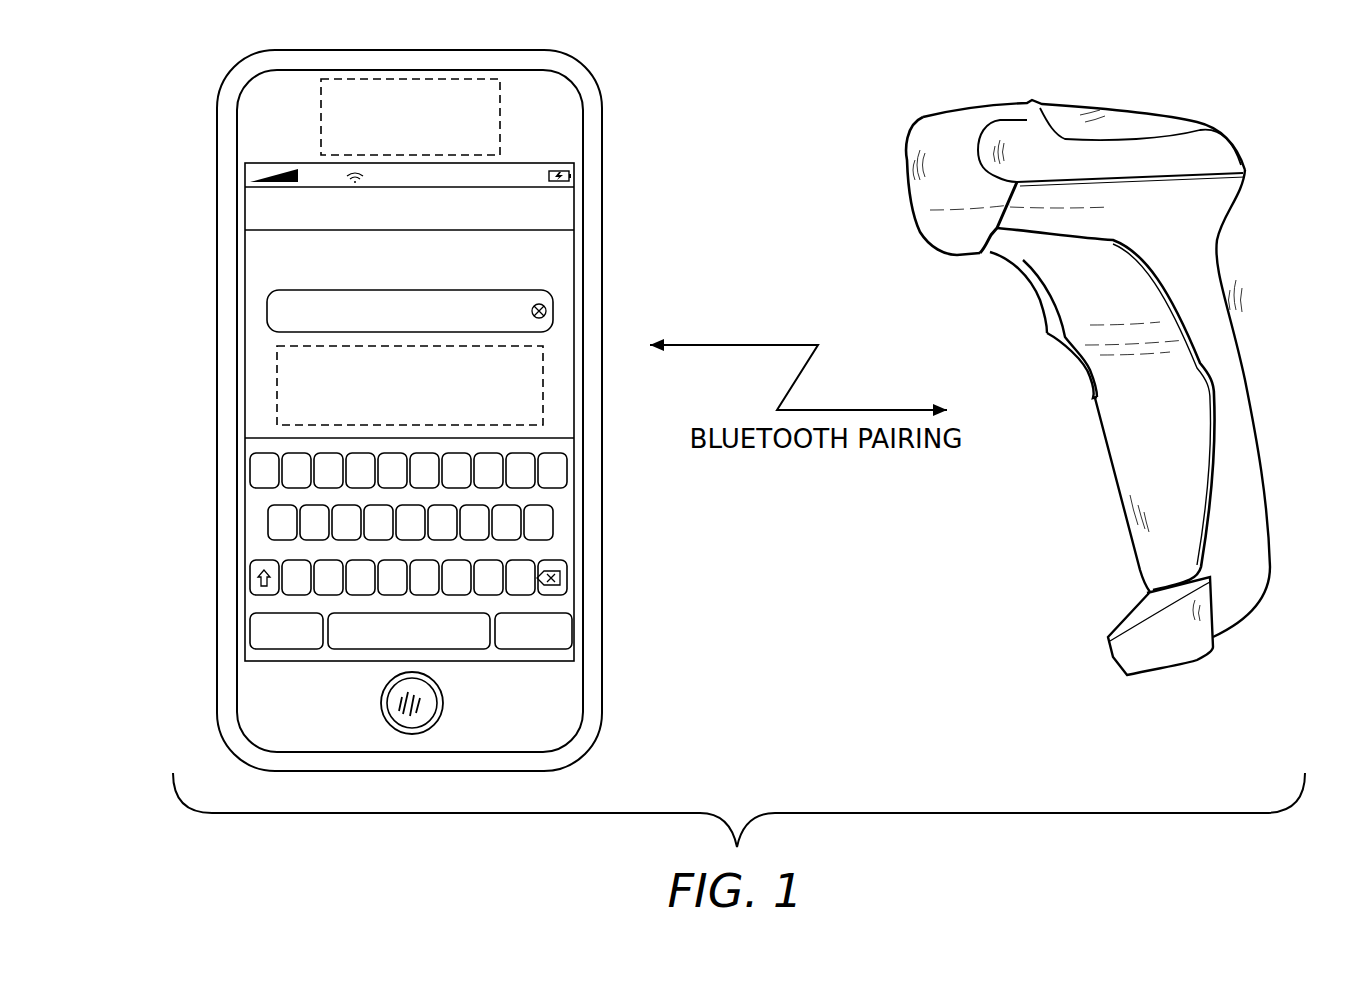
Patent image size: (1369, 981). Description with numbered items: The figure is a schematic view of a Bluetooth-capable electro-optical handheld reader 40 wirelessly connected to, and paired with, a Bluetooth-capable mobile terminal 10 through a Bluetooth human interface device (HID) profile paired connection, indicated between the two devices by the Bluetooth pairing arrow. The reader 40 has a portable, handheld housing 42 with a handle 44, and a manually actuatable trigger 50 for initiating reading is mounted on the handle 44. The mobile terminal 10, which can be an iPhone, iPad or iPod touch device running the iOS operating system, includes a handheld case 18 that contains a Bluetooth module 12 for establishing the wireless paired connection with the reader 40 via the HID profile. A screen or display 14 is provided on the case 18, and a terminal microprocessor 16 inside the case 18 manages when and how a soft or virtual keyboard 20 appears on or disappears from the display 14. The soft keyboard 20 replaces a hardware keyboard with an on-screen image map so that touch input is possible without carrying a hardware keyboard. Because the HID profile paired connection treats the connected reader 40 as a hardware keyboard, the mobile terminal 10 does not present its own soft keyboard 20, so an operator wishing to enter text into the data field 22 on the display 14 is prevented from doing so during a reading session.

The mobile terminal 10 is at (405, 410).
The Bluetooth module 12 is at (321, 117).
The display 14 is at (280, 272).
The terminal microprocessor 16 is at (277, 382).
The case 18 is at (603, 543).
The soft keyboard 20 is at (208, 453).
The data field 22 is at (267, 310).
The handheld reader 40 is at (1117, 377).
The housing 42 is at (1115, 107).
The handle 44 is at (1257, 436).
The trigger 50 is at (1057, 333).